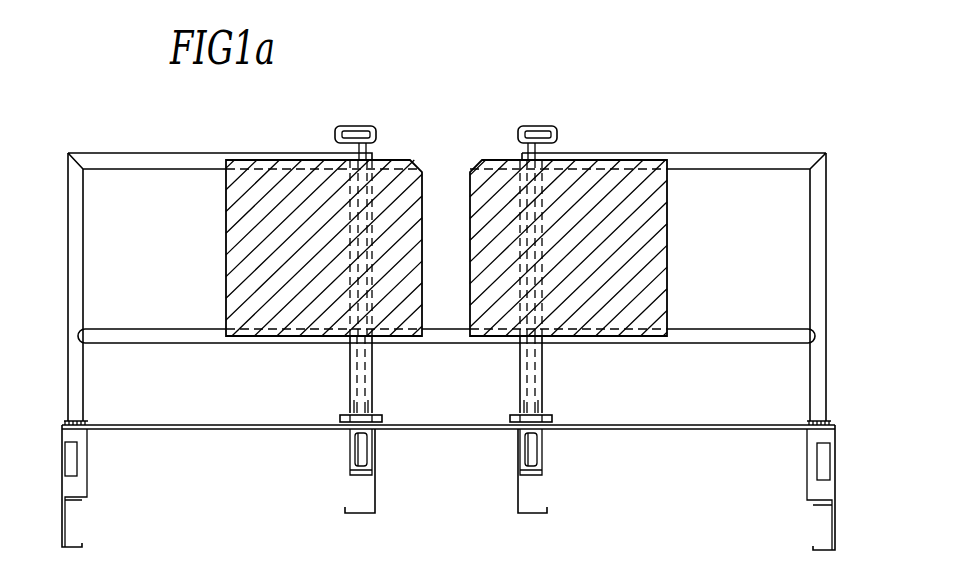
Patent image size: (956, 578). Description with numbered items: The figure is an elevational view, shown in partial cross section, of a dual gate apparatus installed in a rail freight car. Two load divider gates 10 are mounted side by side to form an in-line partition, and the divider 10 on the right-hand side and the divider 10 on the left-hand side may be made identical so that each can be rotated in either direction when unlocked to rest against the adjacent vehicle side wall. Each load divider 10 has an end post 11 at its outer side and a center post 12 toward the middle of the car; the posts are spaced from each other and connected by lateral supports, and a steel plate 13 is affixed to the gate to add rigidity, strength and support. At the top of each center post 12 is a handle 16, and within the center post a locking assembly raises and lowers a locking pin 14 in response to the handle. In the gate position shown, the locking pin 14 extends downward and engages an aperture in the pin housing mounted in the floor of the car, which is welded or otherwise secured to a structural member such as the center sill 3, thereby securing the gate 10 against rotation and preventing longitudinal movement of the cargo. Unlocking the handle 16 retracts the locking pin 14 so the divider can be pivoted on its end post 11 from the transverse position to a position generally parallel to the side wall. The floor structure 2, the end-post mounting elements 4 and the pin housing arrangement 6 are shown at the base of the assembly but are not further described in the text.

The base plate 2 is at (425, 430).
The center sill 3 is at (536, 513).
The retaining clip 4 is at (70, 524).
The fastening arrangement 6 is at (395, 473).
The load divider gate 10 is at (452, 264).
The end post 11 is at (70, 259).
The center post 12 is at (520, 372).
The steel plate 13 is at (226, 298).
The locking pin 14 is at (352, 468).
The handle 16 is at (346, 126).